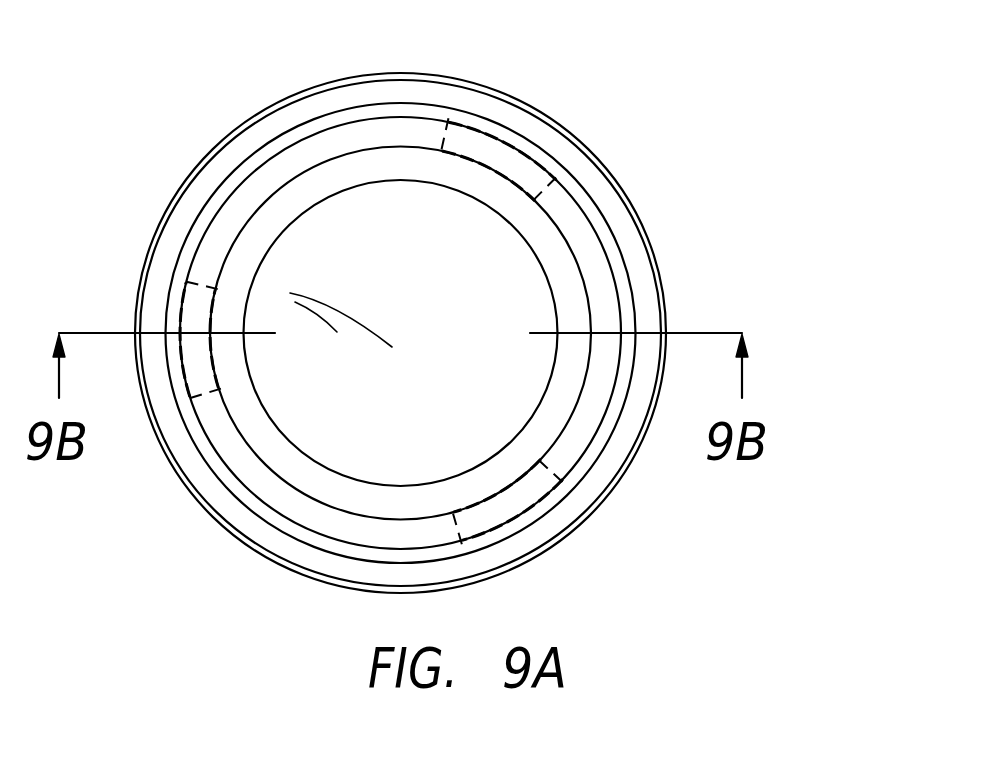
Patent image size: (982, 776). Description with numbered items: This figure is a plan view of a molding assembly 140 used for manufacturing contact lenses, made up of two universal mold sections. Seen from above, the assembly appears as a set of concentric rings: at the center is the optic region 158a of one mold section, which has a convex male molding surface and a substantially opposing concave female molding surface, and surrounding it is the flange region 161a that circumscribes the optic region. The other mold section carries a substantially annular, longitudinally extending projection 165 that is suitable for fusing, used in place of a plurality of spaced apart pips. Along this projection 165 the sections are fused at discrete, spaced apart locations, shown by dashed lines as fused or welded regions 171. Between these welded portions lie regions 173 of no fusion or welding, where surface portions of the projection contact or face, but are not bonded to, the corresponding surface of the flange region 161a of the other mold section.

The molding assembly 140 is at (667, 247).
The optic region 158a is at (500, 290).
The flange region 161a is at (412, 138).
The annular longitudinally extending projection 165 is at (602, 357).
The fused or welded regions 171 is at (488, 148).
The regions of no fusion or welding 173 is at (253, 183).